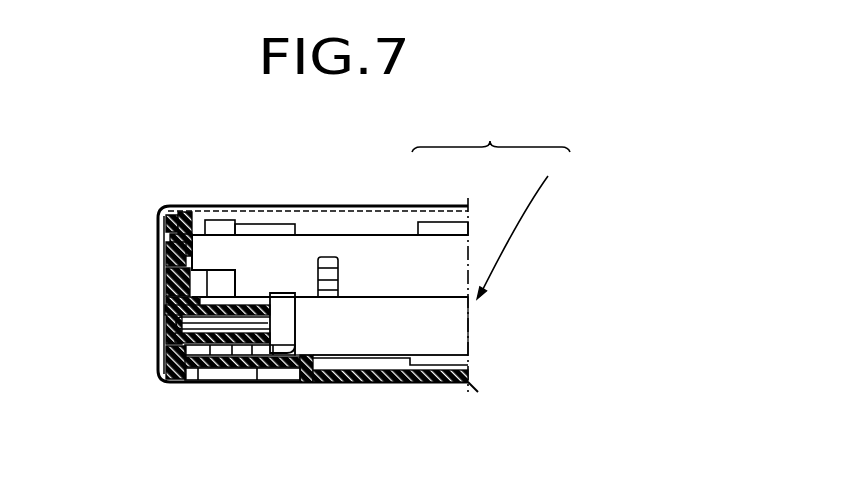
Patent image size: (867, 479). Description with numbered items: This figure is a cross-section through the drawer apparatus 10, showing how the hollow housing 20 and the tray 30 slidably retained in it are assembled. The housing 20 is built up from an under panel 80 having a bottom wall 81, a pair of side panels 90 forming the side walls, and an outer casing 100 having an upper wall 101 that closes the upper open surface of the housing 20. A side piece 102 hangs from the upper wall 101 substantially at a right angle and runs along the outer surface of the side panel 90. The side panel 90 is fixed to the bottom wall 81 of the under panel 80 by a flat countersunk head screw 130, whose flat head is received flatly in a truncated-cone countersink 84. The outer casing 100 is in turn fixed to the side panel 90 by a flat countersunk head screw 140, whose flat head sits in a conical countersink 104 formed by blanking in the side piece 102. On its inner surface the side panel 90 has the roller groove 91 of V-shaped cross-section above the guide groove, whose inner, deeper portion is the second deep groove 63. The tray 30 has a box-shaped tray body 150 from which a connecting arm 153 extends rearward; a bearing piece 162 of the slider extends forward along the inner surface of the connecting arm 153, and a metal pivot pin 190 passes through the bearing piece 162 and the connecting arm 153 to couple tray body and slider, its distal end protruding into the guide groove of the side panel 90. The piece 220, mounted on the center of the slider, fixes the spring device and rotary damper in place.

The drawer apparatus 10 is at (505, 135).
The hollow housing 20 is at (429, 205).
The tray 30 is at (519, 225).
The under panel 80 is at (470, 385).
The bottom wall 81 is at (388, 384).
The countersink 84 is at (168, 370).
The side panel 90 is at (170, 214).
The roller groove 91 is at (160, 247).
The outer casing 100 is at (344, 206).
The upper wall 101 is at (262, 206).
The side piece 102 is at (158, 223).
The conical countersink 104 is at (160, 282).
The flat countersunk head screw 130 is at (182, 382).
The flat countersunk head screw 140 is at (160, 300).
The tray body 150 is at (425, 335).
The connecting arm 153 is at (222, 382).
The bearing piece 162 is at (258, 382).
The pivot pin 190 is at (273, 322).
The piece 220 is at (194, 232).
The second deep groove 63 is at (162, 326).